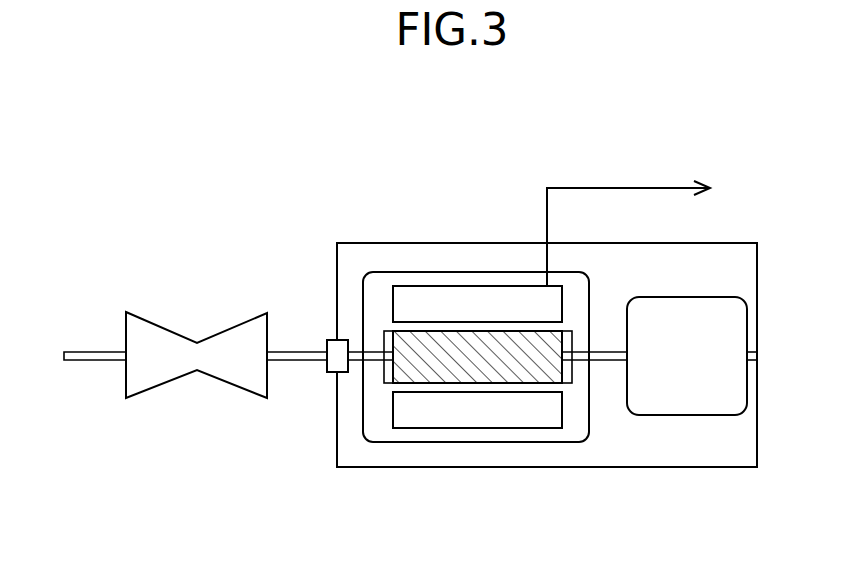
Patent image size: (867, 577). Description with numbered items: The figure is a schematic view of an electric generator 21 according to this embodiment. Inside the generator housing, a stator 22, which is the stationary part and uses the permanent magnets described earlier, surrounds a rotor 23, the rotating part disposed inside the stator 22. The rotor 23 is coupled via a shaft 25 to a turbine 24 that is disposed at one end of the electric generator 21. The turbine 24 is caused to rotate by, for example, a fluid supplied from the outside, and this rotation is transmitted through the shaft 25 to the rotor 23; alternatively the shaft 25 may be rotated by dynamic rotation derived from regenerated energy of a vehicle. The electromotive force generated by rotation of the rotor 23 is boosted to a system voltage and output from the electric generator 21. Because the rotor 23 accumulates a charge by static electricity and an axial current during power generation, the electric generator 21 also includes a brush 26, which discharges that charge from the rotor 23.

The electric generator 21 is at (383, 243).
The stator 22 is at (447, 417).
The rotor 23 is at (492, 376).
The turbine 24 is at (238, 323).
The shaft 25 is at (302, 363).
The brush 26 is at (677, 402).